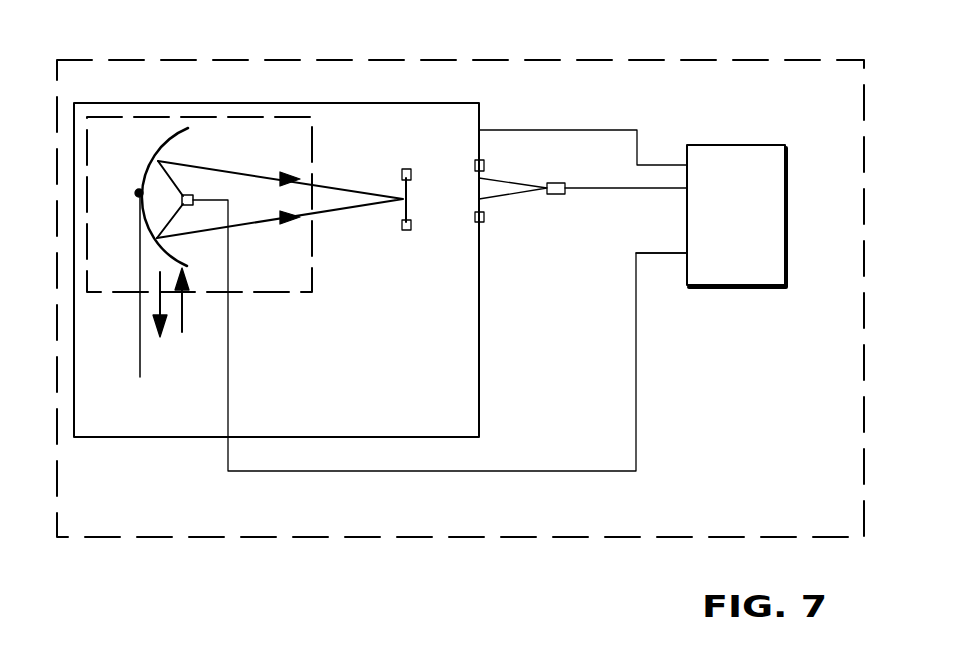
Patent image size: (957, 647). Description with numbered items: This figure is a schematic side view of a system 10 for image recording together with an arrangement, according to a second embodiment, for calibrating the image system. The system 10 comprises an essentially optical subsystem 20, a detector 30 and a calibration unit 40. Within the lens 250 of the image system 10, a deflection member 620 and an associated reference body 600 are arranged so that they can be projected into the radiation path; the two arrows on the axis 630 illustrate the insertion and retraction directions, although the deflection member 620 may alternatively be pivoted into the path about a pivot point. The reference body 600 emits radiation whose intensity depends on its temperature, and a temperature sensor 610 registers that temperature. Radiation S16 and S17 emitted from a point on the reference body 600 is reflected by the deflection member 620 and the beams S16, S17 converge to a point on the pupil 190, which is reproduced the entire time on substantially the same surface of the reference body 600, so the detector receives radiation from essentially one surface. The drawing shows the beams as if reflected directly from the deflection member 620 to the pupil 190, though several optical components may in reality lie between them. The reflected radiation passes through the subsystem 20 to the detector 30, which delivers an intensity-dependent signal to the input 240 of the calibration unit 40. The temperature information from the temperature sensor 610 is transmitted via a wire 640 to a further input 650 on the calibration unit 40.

The system for image recording 10 is at (598, 60).
The optical subsystem 20 is at (373, 103).
The detector 30 is at (555, 183).
The calibration unit 40 is at (767, 230).
The pupil 190 is at (418, 215).
The input 240 is at (685, 192).
The lens 250 is at (250, 292).
The reference body 600 is at (185, 197).
The temperature sensor 610 is at (193, 197).
The deflection member 620 is at (148, 182).
The axis 630 is at (142, 355).
The wire 640 is at (475, 472).
The input 650 is at (686, 257).
The radiation beam S16 is at (347, 188).
The radiation beam S17 is at (335, 213).